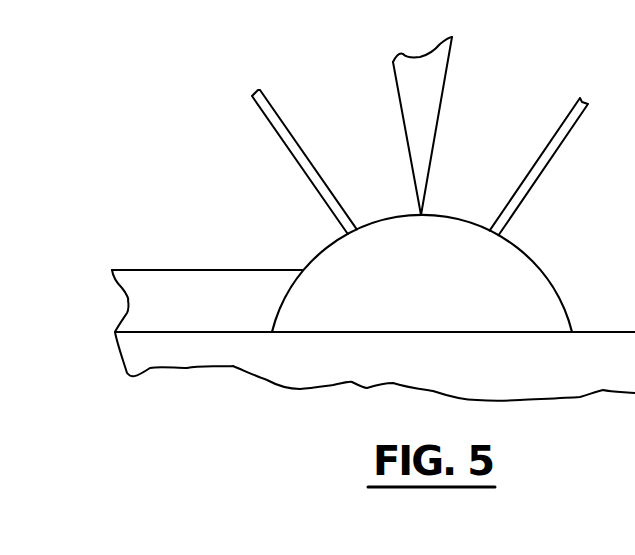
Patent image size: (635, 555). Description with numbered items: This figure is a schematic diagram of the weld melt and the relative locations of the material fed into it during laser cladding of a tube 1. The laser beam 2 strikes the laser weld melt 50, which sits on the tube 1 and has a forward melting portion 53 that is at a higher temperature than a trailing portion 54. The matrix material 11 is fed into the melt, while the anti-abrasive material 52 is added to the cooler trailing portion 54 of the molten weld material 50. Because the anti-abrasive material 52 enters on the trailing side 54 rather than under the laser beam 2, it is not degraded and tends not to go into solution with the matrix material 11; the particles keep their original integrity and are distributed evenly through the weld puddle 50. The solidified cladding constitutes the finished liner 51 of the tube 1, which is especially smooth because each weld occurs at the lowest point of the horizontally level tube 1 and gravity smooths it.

The tube 1 is at (605, 373).
The laser beam 2 is at (427, 90).
The matrix material 11 is at (537, 182).
The laser weld melt 50 is at (383, 307).
The liner 51 is at (147, 302).
The anti-abrasive material 52 is at (307, 183).
The forward melting portion 53 is at (497, 263).
The trailing portion 54 is at (327, 260).